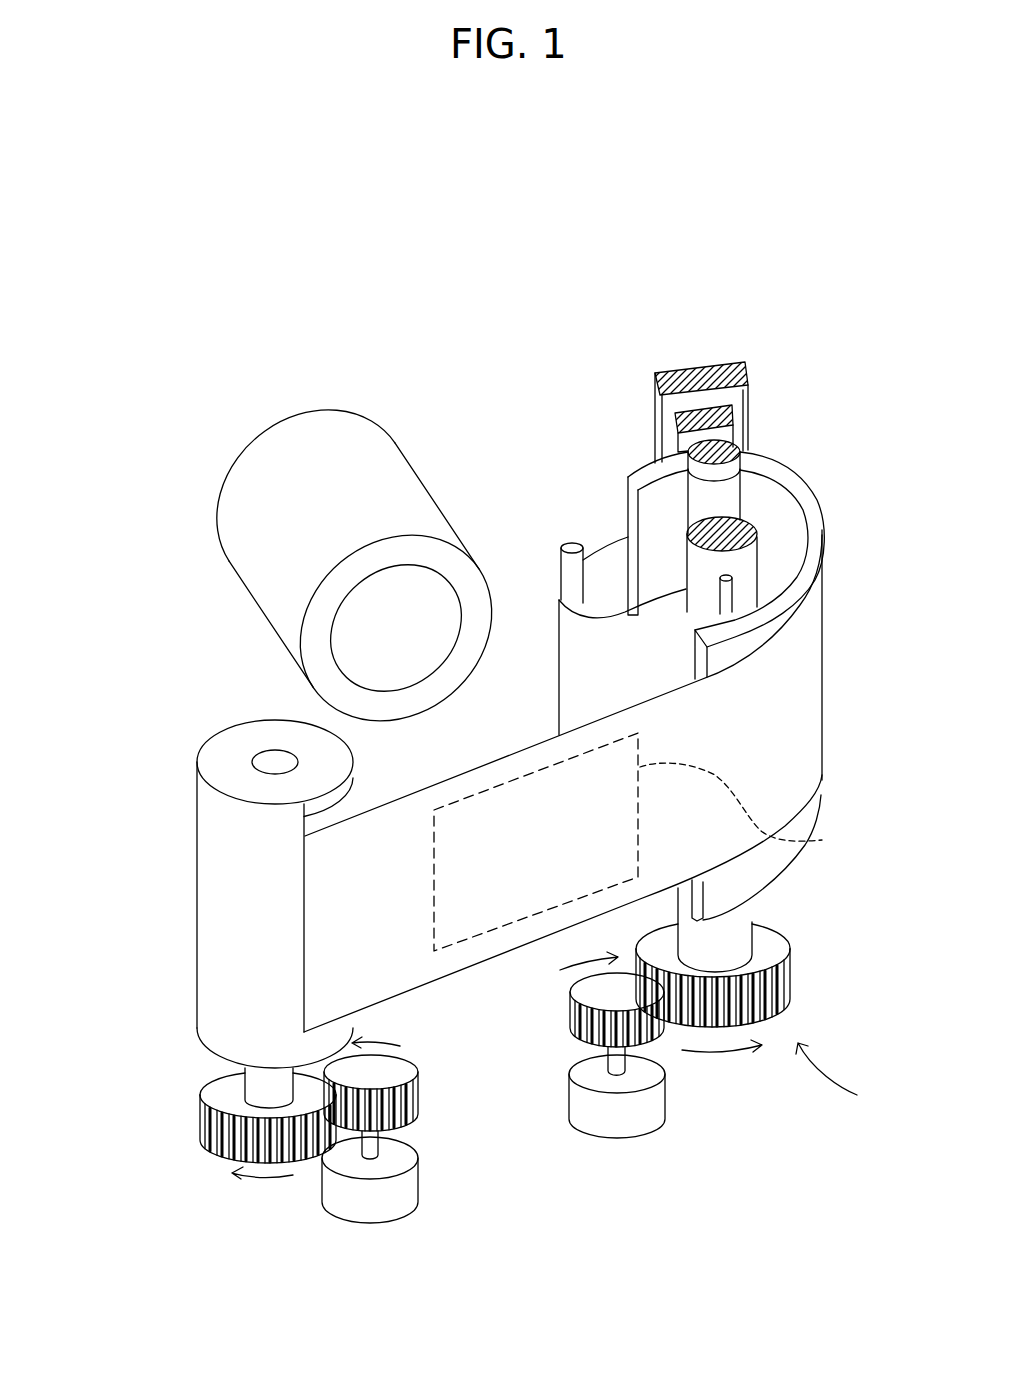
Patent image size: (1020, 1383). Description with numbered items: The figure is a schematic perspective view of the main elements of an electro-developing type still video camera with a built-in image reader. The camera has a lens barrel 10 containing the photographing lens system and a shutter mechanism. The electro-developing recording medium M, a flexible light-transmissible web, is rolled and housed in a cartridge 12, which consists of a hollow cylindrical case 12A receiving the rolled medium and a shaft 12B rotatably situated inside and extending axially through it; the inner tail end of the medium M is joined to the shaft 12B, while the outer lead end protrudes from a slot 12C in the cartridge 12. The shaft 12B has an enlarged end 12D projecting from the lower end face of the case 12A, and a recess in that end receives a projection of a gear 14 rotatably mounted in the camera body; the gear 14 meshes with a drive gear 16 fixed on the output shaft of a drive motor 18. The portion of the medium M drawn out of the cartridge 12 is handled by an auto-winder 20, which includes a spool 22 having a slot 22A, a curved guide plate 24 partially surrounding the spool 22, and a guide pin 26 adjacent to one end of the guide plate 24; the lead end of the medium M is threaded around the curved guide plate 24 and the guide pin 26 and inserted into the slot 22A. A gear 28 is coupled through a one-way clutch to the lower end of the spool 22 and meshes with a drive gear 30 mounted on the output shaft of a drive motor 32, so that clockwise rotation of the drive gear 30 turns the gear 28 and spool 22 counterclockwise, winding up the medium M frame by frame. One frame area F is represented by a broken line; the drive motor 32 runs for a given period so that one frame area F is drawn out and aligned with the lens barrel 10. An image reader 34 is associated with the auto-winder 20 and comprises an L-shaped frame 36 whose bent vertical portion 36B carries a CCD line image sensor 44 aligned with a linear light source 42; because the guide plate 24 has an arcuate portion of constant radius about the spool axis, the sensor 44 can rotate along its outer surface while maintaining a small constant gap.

The lens barrel 10 is at (320, 445).
The cartridge 12 is at (285, 889).
The hollow cylindrical case 12A is at (240, 935).
The shaft 12B is at (275, 762).
The slot 12C is at (355, 800).
The enlarged end 12D is at (272, 1090).
The gear 14 is at (215, 1125).
The drive gear 16 is at (390, 1073).
The drive motor 18 is at (390, 1200).
The auto-winder 20 is at (846, 1079).
The spool 22 is at (798, 744).
The slot 22A is at (730, 578).
The curved guide plate 24 is at (822, 520).
The guide pin 26 is at (572, 544).
The gear 28 is at (778, 990).
The drive gear 30 is at (595, 995).
The drive motor 32 is at (640, 1120).
The image reader 34 is at (705, 364).
The L-shaped frame 36 is at (750, 384).
The vertical portion 36B is at (700, 372).
The linear light source 42 is at (715, 495).
The CCD line image sensor 44 is at (725, 428).
The frame area F is at (822, 840).
The electro-developing recording medium M is at (514, 748).